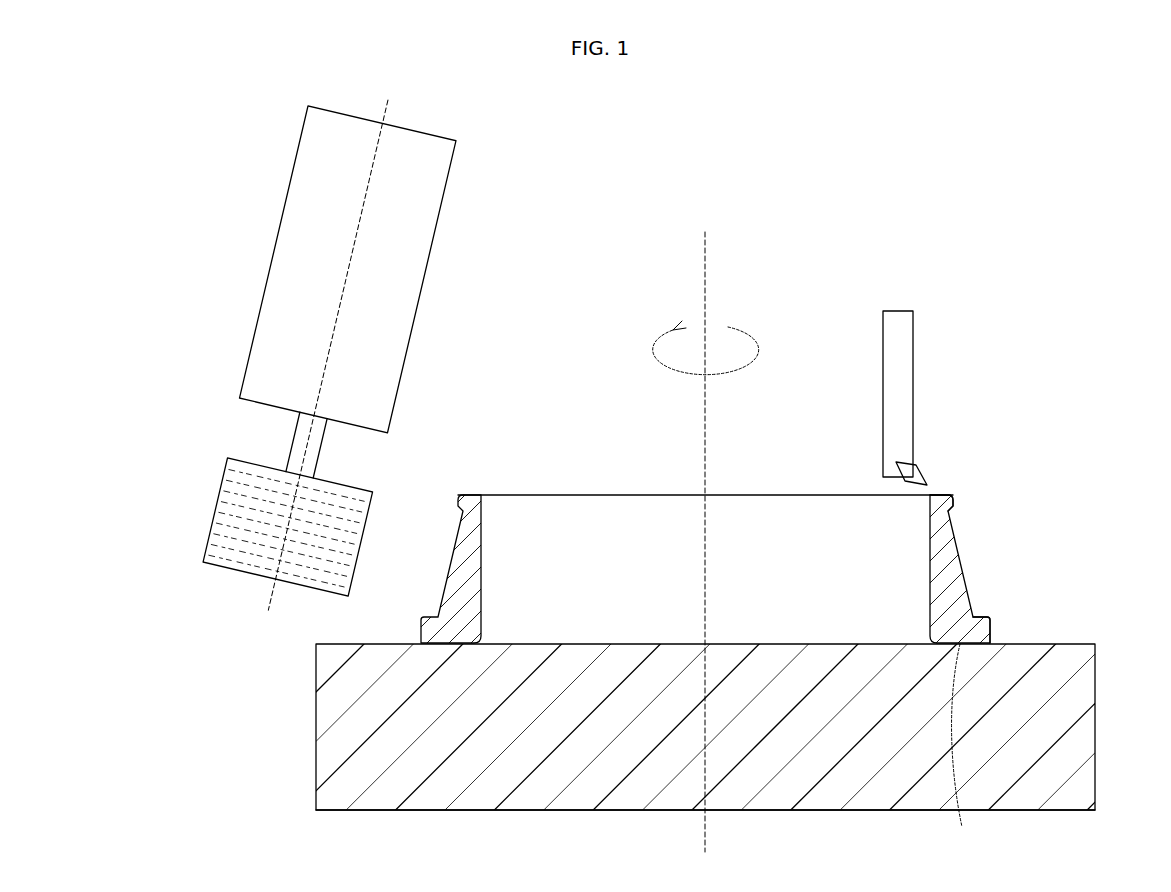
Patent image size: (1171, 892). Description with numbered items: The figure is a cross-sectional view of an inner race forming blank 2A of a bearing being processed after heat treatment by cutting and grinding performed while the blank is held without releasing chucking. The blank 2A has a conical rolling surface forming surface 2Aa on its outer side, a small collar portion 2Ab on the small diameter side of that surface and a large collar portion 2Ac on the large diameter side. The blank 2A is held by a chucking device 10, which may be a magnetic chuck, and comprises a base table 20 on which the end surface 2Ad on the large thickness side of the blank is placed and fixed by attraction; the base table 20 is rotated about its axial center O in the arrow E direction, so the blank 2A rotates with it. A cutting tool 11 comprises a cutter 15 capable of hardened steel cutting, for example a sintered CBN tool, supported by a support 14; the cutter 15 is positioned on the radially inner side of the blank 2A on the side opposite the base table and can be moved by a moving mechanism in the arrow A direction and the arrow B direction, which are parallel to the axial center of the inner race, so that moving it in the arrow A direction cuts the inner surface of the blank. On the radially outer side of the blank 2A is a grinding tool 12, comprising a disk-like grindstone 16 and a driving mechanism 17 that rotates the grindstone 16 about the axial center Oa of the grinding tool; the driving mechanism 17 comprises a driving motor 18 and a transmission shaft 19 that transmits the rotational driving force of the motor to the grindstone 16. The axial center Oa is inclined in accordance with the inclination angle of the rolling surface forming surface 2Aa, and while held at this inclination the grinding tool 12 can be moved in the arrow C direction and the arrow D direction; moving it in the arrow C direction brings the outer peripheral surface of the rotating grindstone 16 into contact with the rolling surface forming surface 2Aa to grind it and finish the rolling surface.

The chucking device 10 is at (518, 811).
The cutting tool 11 is at (908, 398).
The grinding tool 12 is at (447, 197).
The support 14 is at (892, 351).
The cutter 15 is at (926, 474).
The grindstone 16 is at (239, 550).
The driving mechanism 17 is at (401, 277).
The driving motor 18 is at (384, 338).
The transmission shaft 19 is at (322, 448).
The base table 20 is at (1073, 692).
The inner race forming blank 2A is at (699, 641).
The rolling surface forming surface 2Aa is at (962, 562).
The small collar portion 2Ab is at (955, 502).
The large collar portion 2Ac is at (992, 633).
The end surface 2Ad is at (960, 750).
The axial center O is at (705, 256).
The axial center Oa is at (359, 220).
The arrow A direction A is at (905, 515).
The arrow B direction B is at (885, 515).
The arrow C direction C is at (429, 558).
The arrow D direction D is at (382, 540).
The arrow E direction E is at (706, 336).